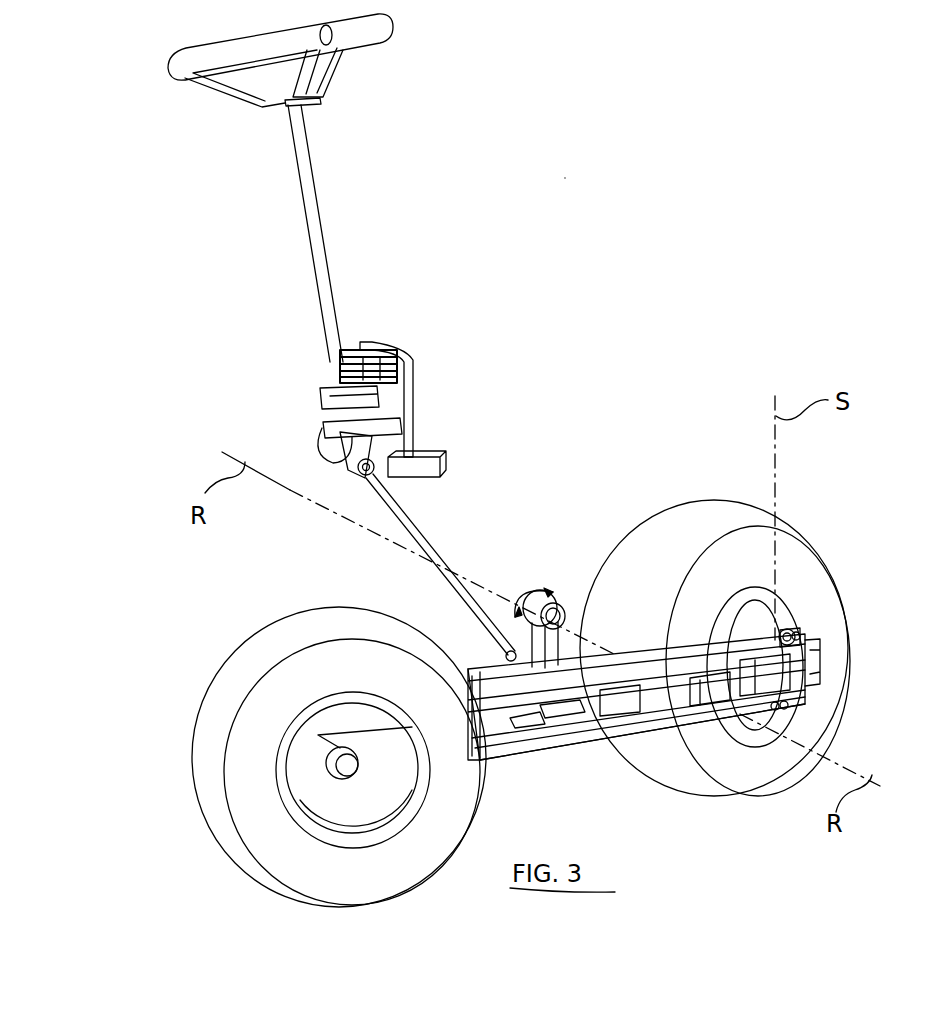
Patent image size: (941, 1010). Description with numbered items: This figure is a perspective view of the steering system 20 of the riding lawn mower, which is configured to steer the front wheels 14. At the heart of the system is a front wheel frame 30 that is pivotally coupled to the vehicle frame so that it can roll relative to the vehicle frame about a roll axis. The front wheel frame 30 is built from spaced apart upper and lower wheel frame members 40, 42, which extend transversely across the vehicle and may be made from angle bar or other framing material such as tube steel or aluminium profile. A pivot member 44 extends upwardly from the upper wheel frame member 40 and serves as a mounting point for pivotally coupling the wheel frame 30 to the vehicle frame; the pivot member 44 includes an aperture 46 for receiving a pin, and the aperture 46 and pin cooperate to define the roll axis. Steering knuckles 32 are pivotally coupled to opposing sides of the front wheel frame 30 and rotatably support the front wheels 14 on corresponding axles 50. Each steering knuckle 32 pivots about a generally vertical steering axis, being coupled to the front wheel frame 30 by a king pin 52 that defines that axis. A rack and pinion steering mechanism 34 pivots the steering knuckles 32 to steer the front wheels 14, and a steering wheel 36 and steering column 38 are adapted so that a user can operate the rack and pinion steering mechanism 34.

The front wheels 14 is at (230, 678).
The steering system 20 is at (563, 180).
The front wheel frame 30 is at (617, 638).
The steering knuckles 32 is at (812, 660).
The rack and pinion steering mechanism 34 is at (520, 712).
The steering wheel 36 is at (225, 53).
The steering column 38 is at (294, 378).
The upper wheel frame member 40 is at (480, 672).
The lower wheel frame member 42 is at (586, 742).
The pivot member 44 is at (508, 644).
The aperture 46 is at (540, 588).
The axles 50 is at (345, 770).
The king pin 52 is at (785, 632).